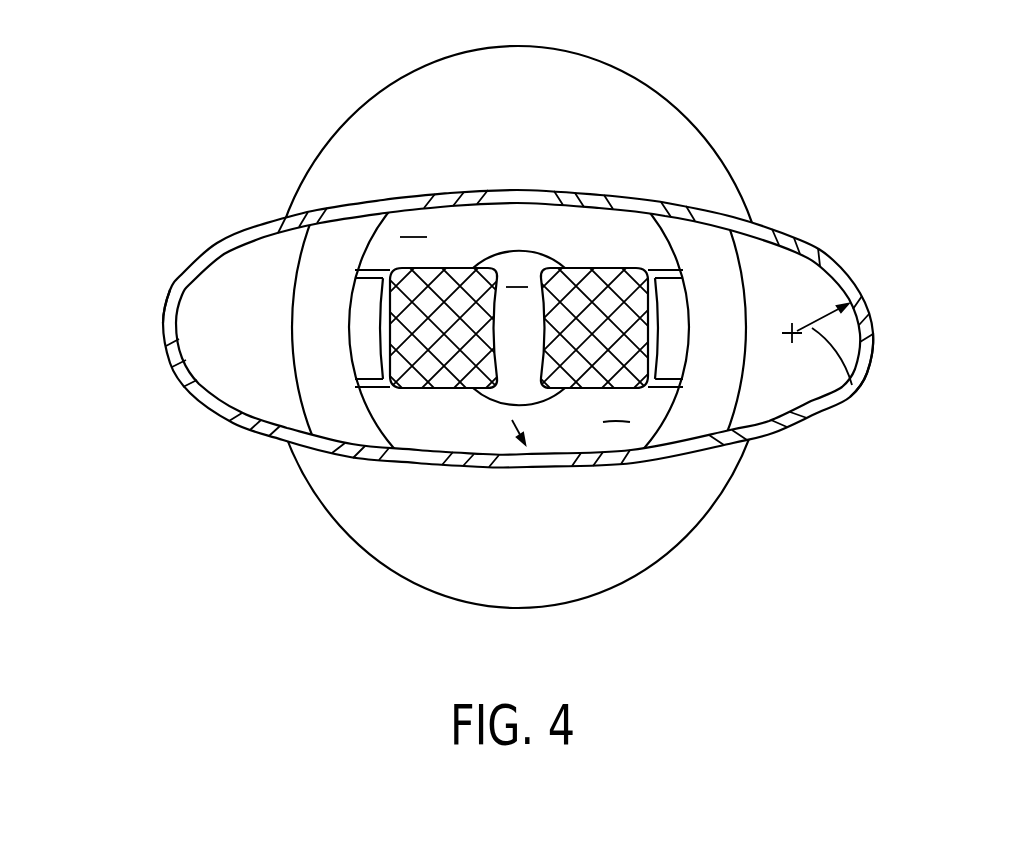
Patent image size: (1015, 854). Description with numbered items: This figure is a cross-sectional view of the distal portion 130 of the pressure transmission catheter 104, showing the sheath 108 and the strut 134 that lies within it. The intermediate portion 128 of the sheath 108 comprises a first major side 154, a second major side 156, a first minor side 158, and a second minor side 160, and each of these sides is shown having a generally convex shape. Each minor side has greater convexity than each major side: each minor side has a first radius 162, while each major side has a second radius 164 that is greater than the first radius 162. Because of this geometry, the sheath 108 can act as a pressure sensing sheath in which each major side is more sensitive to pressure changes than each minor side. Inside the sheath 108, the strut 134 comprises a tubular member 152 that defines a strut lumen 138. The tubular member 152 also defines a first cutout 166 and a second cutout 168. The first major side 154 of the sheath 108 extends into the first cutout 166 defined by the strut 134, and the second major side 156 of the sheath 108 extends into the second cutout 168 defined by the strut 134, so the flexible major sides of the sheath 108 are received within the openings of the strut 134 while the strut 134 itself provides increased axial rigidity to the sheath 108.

The pressure transmission catheter 104 is at (874, 667).
The sheath 108 is at (812, 245).
The intermediate portion 128 is at (850, 277).
The distal portion 130 is at (862, 572).
The strut 134 is at (660, 226).
The strut lumen 138 is at (518, 284).
The tubular member 152 is at (487, 224).
The first major side 154 is at (545, 160).
The second major side 156 is at (506, 512).
The first minor side 158 is at (118, 348).
The second minor side 160 is at (912, 348).
The first radius 162 is at (852, 385).
The second radius 164 is at (510, 420).
The first cutout 166 is at (413, 235).
The second cutout 168 is at (612, 423).